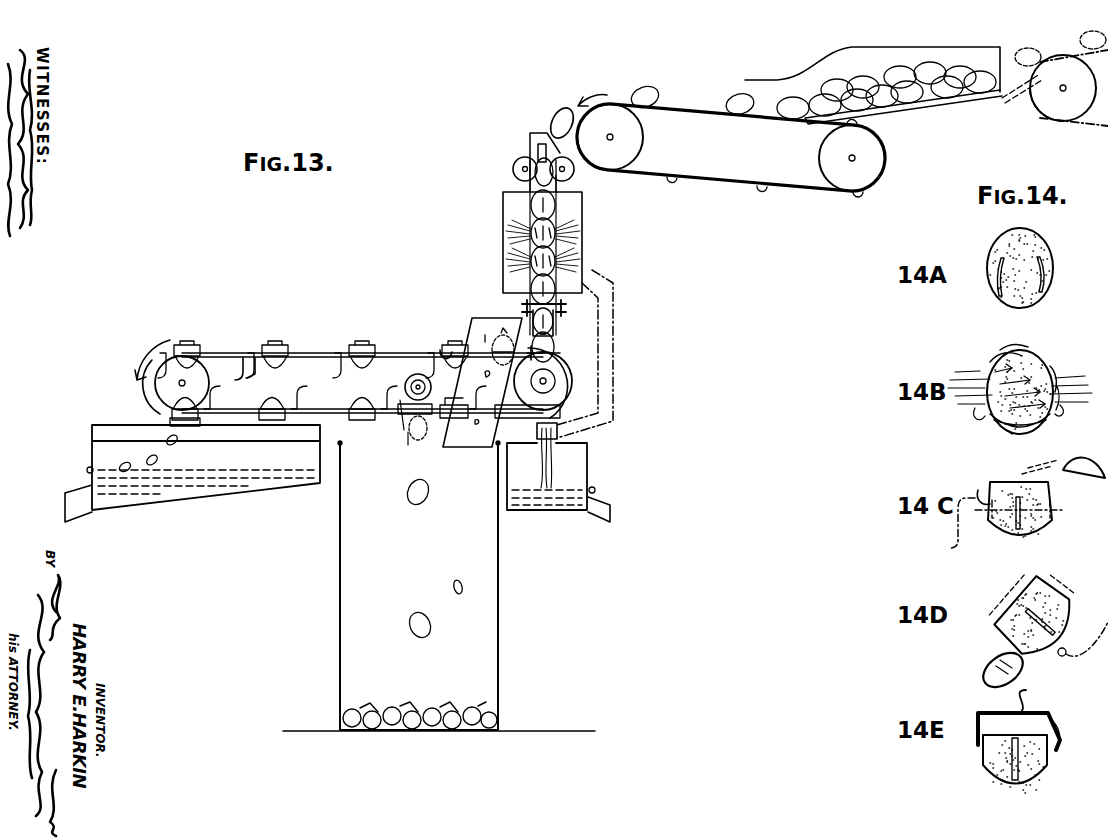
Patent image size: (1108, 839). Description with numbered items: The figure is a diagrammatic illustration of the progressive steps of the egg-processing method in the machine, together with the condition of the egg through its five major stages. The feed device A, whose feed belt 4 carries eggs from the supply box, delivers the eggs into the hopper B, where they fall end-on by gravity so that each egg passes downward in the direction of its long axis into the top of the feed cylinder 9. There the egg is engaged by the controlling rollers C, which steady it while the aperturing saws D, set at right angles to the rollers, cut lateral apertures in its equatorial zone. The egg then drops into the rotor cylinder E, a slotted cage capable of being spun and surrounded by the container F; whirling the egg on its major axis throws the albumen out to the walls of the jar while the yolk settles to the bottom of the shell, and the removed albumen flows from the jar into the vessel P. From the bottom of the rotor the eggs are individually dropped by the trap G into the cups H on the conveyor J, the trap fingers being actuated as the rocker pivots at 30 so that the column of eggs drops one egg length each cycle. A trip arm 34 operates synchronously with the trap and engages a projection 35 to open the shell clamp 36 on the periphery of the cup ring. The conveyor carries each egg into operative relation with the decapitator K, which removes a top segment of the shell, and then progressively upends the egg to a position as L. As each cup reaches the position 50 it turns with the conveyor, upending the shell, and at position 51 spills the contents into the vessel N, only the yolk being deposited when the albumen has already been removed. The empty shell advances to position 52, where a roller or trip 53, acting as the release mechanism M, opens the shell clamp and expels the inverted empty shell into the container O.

The feed device A is at (707, 112).
The feed belt 4 is at (746, 188).
The hopper B is at (531, 150).
The controlling rollers C is at (532, 153).
The aperturing saws D is at (513, 170).
The feed cylinder 9 is at (529, 186).
The rotor cylinder E is at (520, 222).
The container F is at (503, 272).
The rocker pivot 30 is at (530, 312).
The trap G is at (564, 323).
The decapitator K is at (447, 350).
The shell clamp 36 is at (503, 336).
The cups H is at (446, 352).
The conveyor J is at (313, 352).
The trip arm 34 is at (256, 376).
The upending position 50 is at (180, 342).
The spilling position 51 is at (170, 419).
The upended egg position L is at (253, 408).
The projection 35 is at (556, 381).
The release mechanism M is at (404, 378).
The trip roller 53 is at (408, 437).
The shell ejection position 52 is at (407, 407).
The vessel N is at (230, 468).
The shell container O is at (358, 567).
The albumen vessel P is at (580, 465).